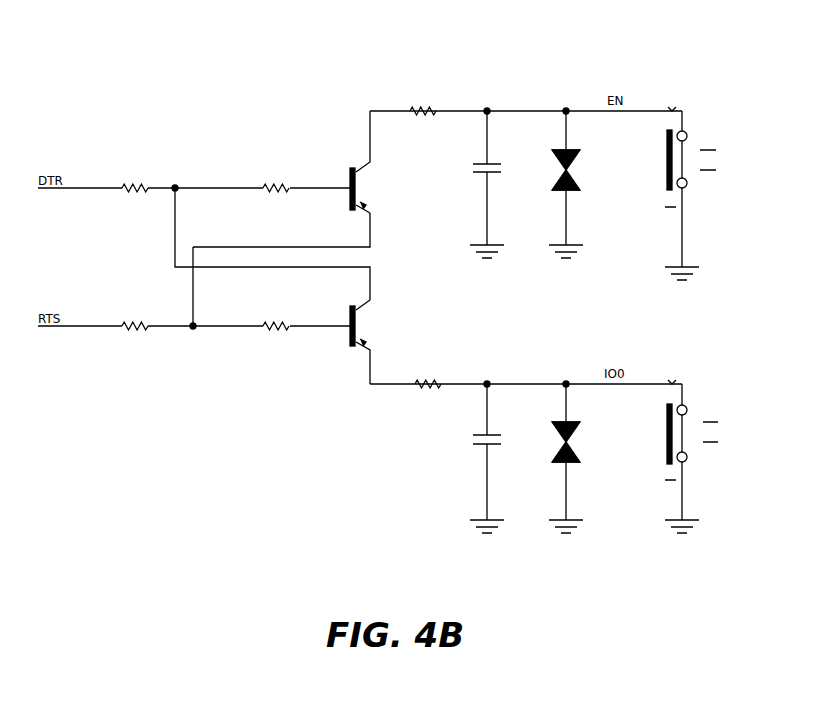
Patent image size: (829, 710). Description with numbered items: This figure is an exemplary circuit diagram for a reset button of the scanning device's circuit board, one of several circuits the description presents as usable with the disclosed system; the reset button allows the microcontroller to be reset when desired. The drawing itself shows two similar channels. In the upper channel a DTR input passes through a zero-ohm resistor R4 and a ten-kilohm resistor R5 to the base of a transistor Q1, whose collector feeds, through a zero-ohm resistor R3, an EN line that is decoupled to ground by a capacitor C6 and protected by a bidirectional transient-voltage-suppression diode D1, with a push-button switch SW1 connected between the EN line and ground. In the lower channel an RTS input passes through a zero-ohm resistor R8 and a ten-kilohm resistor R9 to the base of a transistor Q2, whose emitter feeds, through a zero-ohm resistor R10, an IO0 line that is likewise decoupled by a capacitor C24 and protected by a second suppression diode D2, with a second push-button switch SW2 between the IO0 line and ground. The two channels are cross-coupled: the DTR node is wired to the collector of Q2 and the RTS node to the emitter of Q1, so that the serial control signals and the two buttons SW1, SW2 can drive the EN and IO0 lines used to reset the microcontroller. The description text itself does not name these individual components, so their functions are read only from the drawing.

The resistor R3 0Ω R3 is at (423, 110).
The resistor R4 0Ω R4 is at (134, 186).
The resistor R5 10KΩ R5 is at (270, 180).
The resistor R8 0Ω R8 is at (134, 324).
The resistor R9 10KΩ R9 is at (270, 318).
The resistor R10 0Ω R10 is at (426, 383).
The transistor Q1 SS8050-G Q1 is at (393, 173).
The transistor Q2 SS8050-G Q2 is at (393, 334).
The capacitor C6 0.1uF 50V C6 is at (504, 196).
The capacitor C24 0.1uF 50V C24 is at (504, 470).
The TVS diode on EN D1 is at (564, 196).
The TVS diode on IO0 D2 is at (564, 470).
The switch SW1 is at (674, 205).
The switch SW2 TL1105 SW2 is at (664, 468).